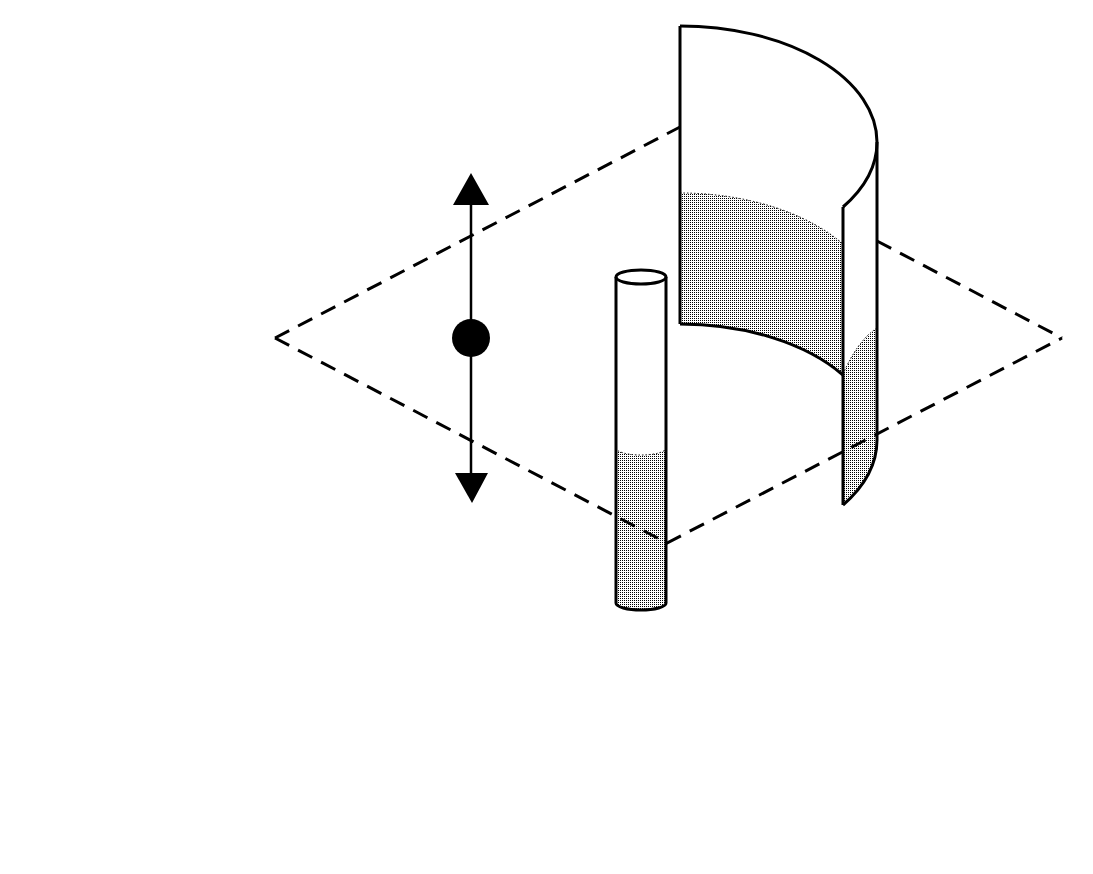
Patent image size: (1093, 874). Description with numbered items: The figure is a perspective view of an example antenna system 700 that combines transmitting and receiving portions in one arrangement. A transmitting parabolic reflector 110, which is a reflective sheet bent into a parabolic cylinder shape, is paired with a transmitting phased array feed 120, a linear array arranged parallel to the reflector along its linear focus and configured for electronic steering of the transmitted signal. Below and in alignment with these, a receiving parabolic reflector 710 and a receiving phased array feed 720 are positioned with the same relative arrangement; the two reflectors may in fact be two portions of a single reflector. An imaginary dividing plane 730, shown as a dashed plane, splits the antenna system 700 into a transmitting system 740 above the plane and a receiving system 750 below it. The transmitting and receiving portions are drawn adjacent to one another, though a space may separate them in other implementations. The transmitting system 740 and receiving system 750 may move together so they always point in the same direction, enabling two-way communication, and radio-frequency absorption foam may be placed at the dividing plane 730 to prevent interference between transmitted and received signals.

The antenna system 700 is at (593, 397).
The transmitting parabolic reflector 110 is at (815, 270).
The transmitting phased array feed 120 is at (686, 452).
The receiving parabolic reflector 710 is at (863, 482).
The receiving phased array feed 720 is at (668, 593).
The imaginary dividing plane 730 is at (668, 335).
The transmitting system 740 is at (451, 174).
The receiving system 750 is at (457, 510).